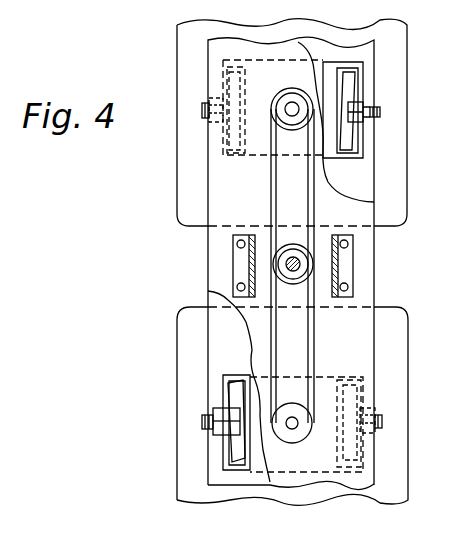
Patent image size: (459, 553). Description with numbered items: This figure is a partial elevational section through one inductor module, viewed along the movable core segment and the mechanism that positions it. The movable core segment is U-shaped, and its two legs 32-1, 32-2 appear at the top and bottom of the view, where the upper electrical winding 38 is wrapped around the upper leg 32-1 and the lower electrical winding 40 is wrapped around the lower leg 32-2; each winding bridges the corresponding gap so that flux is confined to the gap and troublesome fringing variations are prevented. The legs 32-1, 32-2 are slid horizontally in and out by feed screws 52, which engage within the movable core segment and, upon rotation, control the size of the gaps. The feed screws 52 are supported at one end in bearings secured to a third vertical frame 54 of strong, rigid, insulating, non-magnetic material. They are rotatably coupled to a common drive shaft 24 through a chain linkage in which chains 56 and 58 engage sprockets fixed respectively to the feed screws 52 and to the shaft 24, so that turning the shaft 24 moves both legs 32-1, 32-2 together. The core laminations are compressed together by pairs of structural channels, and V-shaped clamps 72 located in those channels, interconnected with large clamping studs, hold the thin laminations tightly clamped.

The drive shaft 24 is at (295, 272).
The leg of movable core segment 32-1 is at (352, 168).
The leg of movable core segment 32-2 is at (222, 448).
The upper electrical winding 38 is at (185, 170).
The lower electrical winding 40 is at (180, 355).
The feed screws 52 is at (290, 101).
The third vertical frame 54 is at (218, 248).
The chain 56 is at (272, 183).
The chain 58 is at (313, 358).
The V-shaped clamps 72 is at (350, 83).